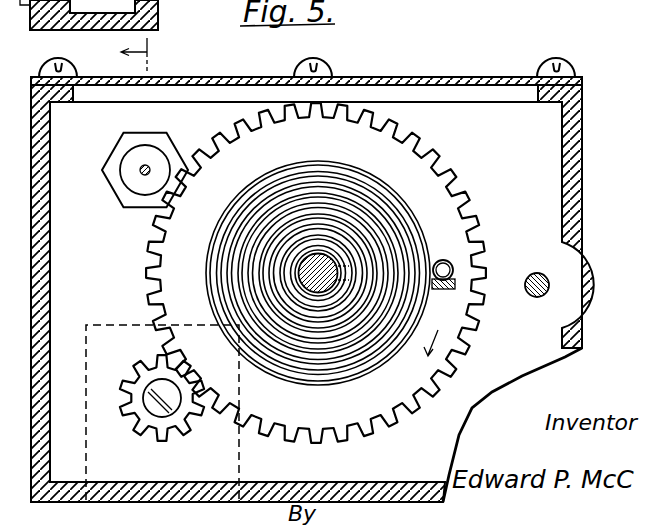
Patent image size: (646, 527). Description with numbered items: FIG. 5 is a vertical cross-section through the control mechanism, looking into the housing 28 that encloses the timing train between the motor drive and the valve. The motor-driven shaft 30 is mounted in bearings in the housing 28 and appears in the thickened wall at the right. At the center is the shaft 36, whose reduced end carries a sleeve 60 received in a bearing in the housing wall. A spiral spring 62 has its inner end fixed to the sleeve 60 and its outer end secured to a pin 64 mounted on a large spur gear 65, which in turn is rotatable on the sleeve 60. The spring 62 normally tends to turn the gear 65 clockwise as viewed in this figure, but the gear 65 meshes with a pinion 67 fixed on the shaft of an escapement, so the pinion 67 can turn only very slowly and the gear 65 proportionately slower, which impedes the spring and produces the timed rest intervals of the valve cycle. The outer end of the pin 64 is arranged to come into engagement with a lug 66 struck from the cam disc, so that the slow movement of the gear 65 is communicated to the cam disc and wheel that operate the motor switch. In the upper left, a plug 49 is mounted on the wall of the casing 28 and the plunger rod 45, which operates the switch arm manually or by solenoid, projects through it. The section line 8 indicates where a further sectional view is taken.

The section line 8 is at (141, 53).
The housing 28 is at (582, 177).
The shaft 30 is at (551, 283).
The shaft 36 is at (316, 254).
The plunger rod 45 is at (143, 172).
The plug 49 is at (136, 153).
The sleeve 60 is at (313, 296).
The spiral spring 62 is at (416, 222).
The pin 64 is at (450, 262).
The spur gear 65 is at (462, 184).
The lug 66 is at (443, 292).
The pinion 67 is at (135, 415).